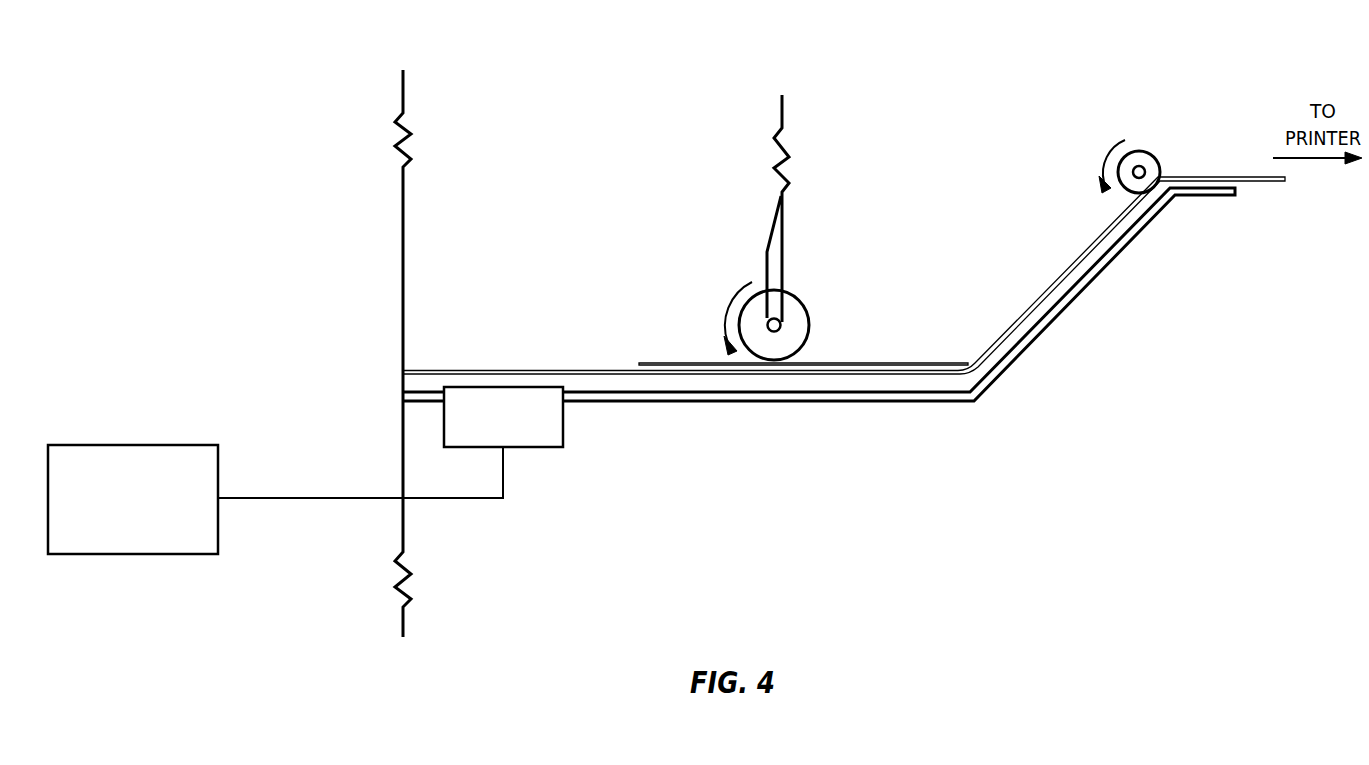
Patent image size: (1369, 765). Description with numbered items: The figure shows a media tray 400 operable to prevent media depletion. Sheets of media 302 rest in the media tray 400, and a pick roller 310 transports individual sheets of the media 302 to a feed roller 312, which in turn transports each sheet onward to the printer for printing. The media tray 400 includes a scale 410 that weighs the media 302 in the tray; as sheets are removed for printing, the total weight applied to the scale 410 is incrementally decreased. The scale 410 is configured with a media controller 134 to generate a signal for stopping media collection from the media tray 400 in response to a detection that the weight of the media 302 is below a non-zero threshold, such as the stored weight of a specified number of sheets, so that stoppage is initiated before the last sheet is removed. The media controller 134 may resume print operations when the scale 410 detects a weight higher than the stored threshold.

The media controller 134 is at (275, 499).
The media 302 is at (962, 373).
The pick roller 310 is at (809, 318).
The feed roller 312 is at (1140, 151).
The media tray 400 is at (1133, 527).
The scale 410 is at (563, 431).